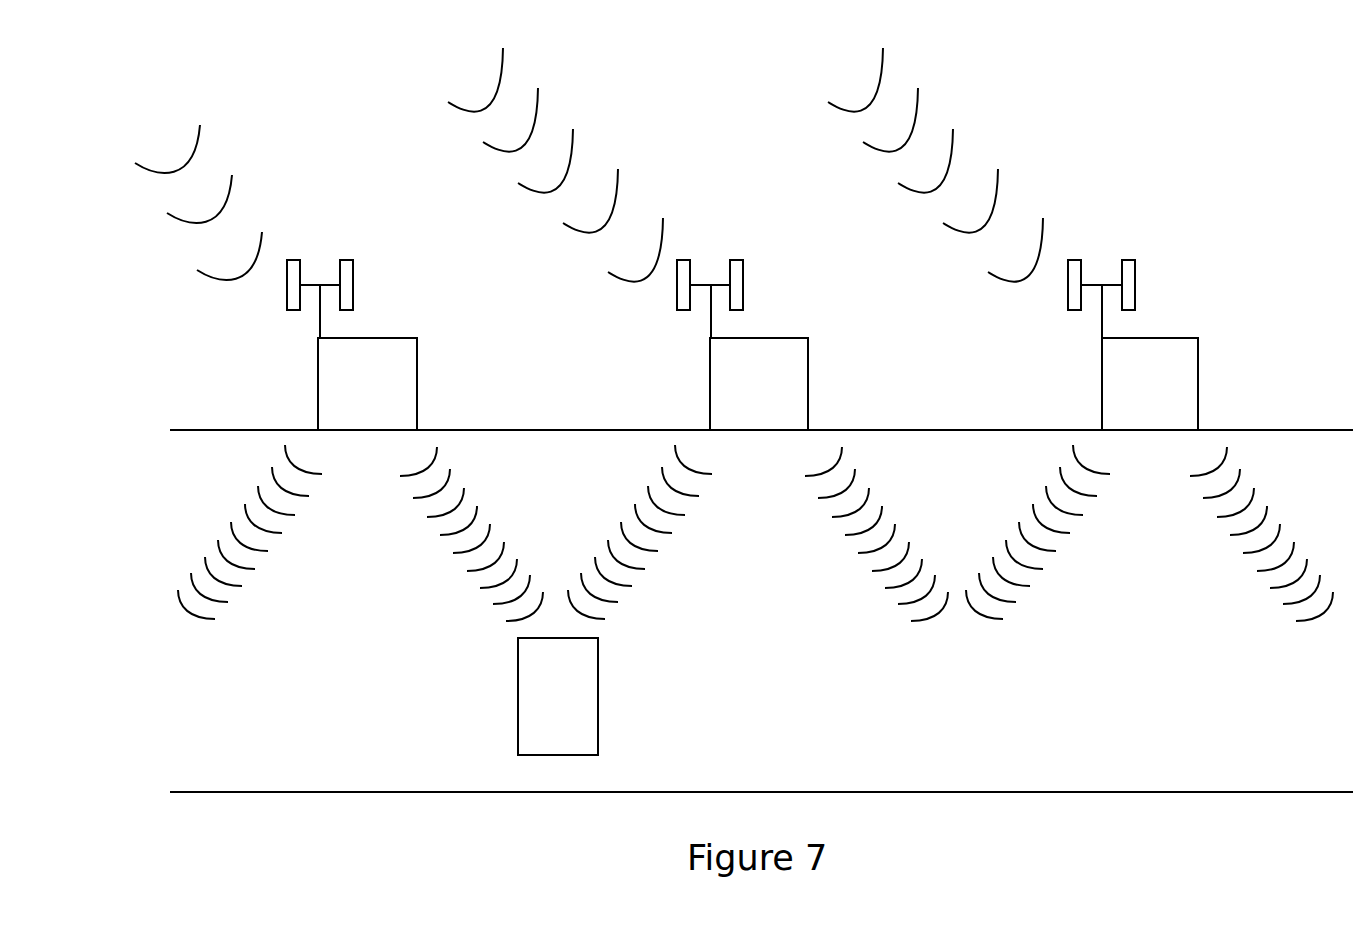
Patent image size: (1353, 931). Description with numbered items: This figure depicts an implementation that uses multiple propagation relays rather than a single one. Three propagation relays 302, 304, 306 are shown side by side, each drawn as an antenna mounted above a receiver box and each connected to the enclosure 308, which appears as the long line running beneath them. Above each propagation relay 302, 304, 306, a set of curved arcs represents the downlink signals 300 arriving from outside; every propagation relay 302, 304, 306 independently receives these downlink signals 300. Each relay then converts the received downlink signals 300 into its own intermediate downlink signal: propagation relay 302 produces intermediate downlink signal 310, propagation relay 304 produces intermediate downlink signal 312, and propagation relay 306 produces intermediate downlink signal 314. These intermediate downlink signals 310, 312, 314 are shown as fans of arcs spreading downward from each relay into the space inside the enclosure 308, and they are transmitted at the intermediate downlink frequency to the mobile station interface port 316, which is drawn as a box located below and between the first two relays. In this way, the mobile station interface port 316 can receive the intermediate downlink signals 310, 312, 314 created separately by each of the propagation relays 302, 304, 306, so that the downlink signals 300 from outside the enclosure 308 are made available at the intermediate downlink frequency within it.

The downlink signals 300 is at (233, 188).
The propagation relay 302 is at (352, 345).
The propagation relay 304 is at (742, 345).
The propagation relay 306 is at (1133, 345).
The enclosure 308 is at (242, 794).
The intermediate downlink signal 310 is at (243, 571).
The intermediate downlink signal 312 is at (633, 571).
The intermediate downlink signal 314 is at (1031, 571).
The mobile station interface port 316 is at (558, 696).